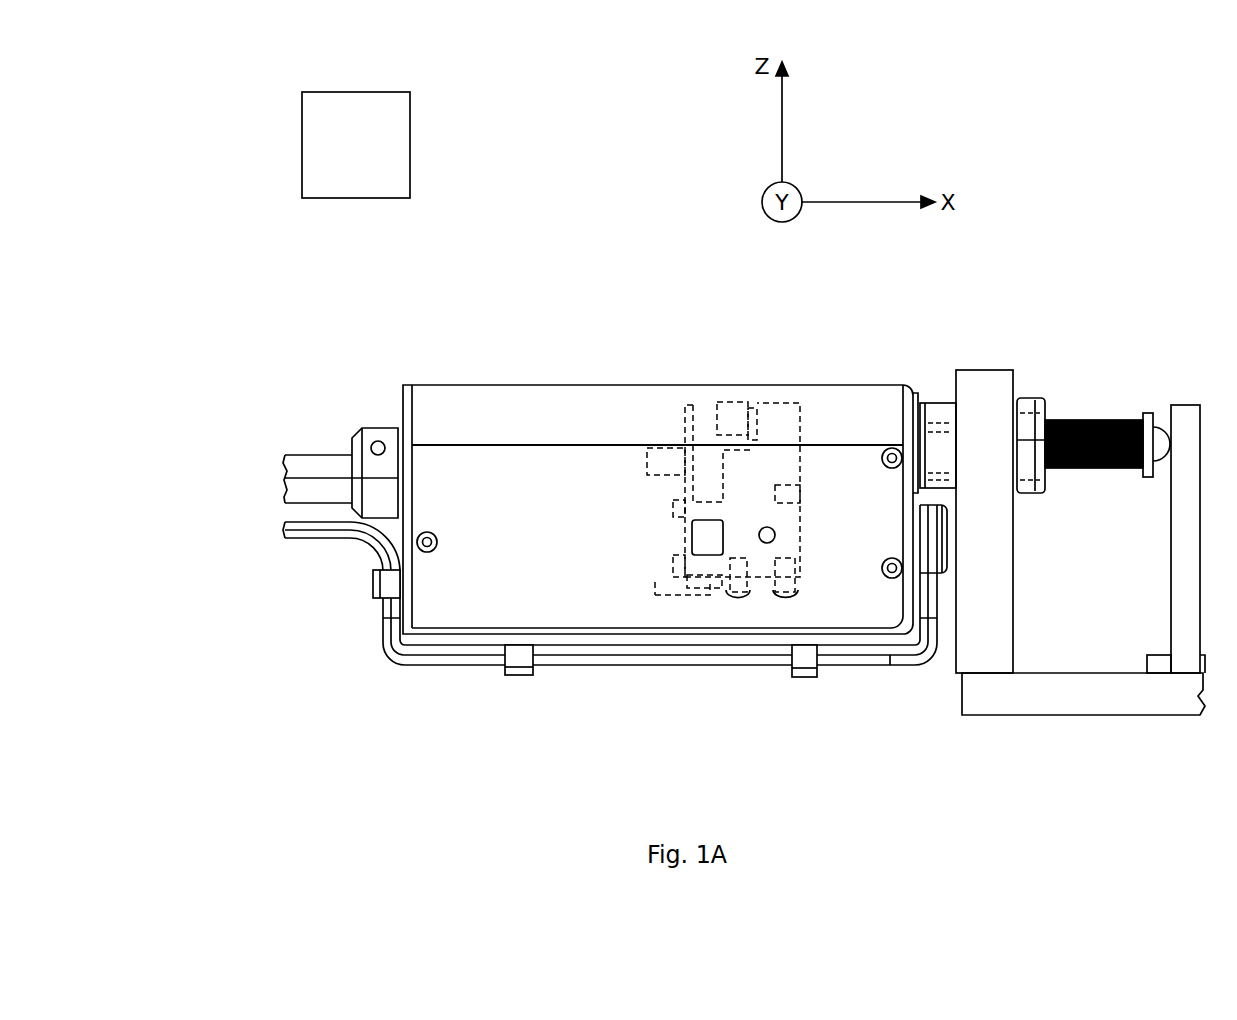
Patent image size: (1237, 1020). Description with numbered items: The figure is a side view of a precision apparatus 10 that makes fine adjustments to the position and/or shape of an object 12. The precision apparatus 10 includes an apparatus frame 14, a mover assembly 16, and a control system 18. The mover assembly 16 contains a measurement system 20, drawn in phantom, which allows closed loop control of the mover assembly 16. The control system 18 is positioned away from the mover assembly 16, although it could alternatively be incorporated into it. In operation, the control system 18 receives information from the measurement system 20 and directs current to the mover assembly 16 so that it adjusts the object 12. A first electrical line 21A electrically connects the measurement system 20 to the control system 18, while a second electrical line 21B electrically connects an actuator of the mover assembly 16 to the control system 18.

The precision apparatus 10 is at (993, 337).
The object 12 is at (1186, 418).
The apparatus frame 14 is at (1065, 697).
The mover assembly 16 is at (813, 372).
The control system 18 is at (356, 145).
The measurement system 20 is at (727, 413).
The first electrical line 21A is at (318, 468).
The second electrical line 21B is at (310, 525).